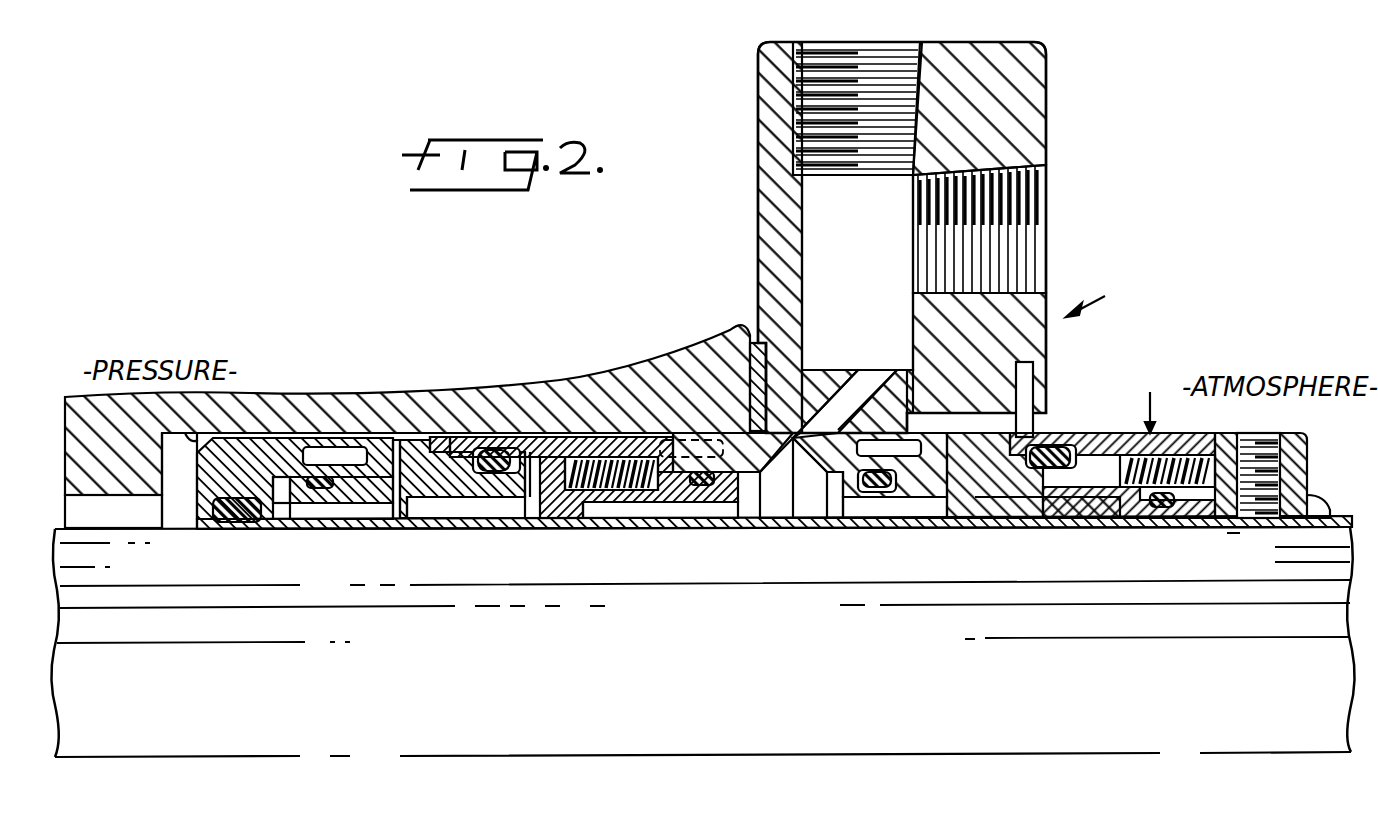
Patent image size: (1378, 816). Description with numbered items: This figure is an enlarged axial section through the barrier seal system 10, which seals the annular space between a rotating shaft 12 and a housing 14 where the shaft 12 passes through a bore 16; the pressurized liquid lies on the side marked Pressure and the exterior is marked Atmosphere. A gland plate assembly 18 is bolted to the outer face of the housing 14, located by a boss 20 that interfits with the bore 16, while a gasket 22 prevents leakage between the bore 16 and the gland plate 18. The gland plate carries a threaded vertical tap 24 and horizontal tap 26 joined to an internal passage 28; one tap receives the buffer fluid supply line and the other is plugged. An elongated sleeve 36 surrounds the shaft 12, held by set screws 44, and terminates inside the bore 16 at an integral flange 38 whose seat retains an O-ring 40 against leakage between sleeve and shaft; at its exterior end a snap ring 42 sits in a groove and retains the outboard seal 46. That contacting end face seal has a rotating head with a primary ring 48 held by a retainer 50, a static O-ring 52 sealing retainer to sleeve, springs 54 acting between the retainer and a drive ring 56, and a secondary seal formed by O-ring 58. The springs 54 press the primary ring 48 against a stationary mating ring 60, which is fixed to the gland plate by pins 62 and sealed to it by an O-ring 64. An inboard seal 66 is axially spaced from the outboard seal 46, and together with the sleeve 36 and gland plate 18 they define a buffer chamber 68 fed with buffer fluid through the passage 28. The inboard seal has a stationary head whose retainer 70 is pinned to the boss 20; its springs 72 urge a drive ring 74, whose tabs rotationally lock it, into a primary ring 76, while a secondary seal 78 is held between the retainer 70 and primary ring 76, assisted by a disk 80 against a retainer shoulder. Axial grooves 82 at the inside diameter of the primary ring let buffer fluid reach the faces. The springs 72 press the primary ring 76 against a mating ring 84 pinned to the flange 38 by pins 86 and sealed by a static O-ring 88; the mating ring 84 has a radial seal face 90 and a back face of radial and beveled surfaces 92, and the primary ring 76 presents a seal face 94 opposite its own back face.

The barrier seal system 10 is at (1104, 292).
The rotating shaft 12 is at (920, 738).
The housing 14 is at (285, 400).
The bore 16 is at (215, 433).
The gland plate assembly 18 is at (1046, 62).
The boss 20 is at (740, 432).
The gasket 22 is at (752, 350).
The vertical tap 24 is at (905, 48).
The horizontal tap 26 is at (1040, 242).
The internal passage 28 is at (880, 378).
The sleeve 36 is at (706, 528).
The flange 38 is at (207, 495).
The O-ring 40 is at (245, 522).
The snap ring 42 is at (1300, 500).
The set screws 44 is at (1265, 497).
The outboard seal 46 is at (1147, 398).
The primary ring 48 is at (1045, 495).
The retainer 50 is at (1172, 438).
The static O-ring 52 is at (1157, 507).
The springs 54 is at (1140, 456).
The drive ring 56 is at (1115, 500).
The O-ring 58 is at (1055, 450).
The mating ring 60 is at (915, 500).
The pins 62 is at (875, 447).
The O-ring 64 is at (883, 488).
The inboard seal 66 is at (574, 432).
The buffer chamber 68 is at (812, 505).
The retainer 70 is at (611, 455).
The springs 72 is at (635, 490).
The drive ring 74 is at (548, 500).
The primary ring 76 is at (447, 455).
The secondary seal 78 is at (495, 473).
The disk 80 is at (527, 440).
The axial grooves 82 is at (470, 500).
The mating ring 84 is at (362, 493).
The pins 86 is at (330, 455).
The static O-ring 88 is at (330, 503).
The radial seal face 90 is at (400, 437).
The radial and beveled surfaces 92 is at (323, 488).
The seal face 94 is at (380, 500).